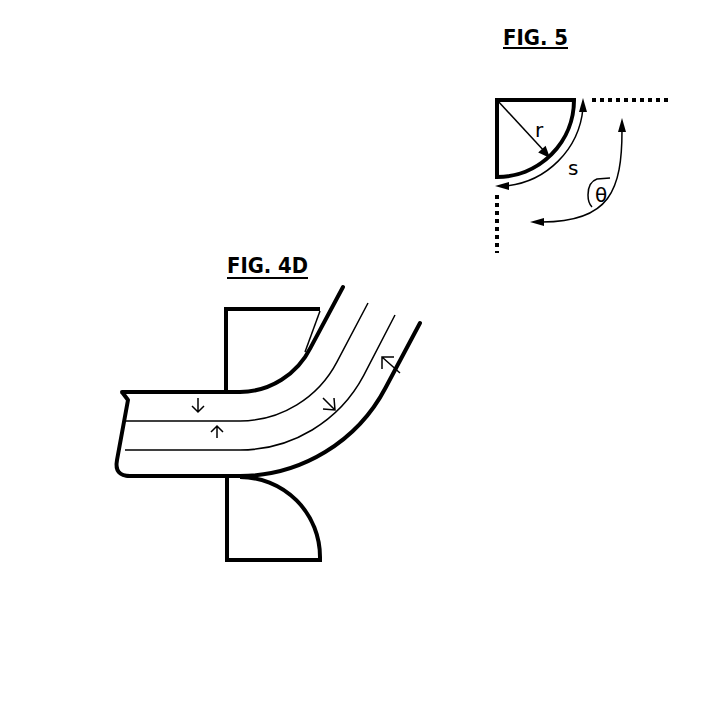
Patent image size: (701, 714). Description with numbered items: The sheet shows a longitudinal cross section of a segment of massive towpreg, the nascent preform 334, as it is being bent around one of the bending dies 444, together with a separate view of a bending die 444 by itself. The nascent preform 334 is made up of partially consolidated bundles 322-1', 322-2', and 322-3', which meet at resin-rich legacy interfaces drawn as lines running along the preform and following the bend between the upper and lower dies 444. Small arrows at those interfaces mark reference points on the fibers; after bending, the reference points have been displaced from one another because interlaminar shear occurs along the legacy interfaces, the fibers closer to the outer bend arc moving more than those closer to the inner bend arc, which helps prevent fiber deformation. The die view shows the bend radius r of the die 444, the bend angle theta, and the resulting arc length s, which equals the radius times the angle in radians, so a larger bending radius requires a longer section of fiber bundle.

In FIG. 4D, the nascent preform 334 is at (123, 405).
In FIG. 4D, the partially consolidated bundle 322-1' is at (231, 349).
In FIG. 4D, the partially consolidated bundle 322-2' is at (255, 433).
In FIG. 4D, the partially consolidated bundle 322-3' is at (301, 399).
In FIG. 4D, the bending die 444 is at (275, 349).
In FIG. 5, the bending die 444 is at (490, 140).